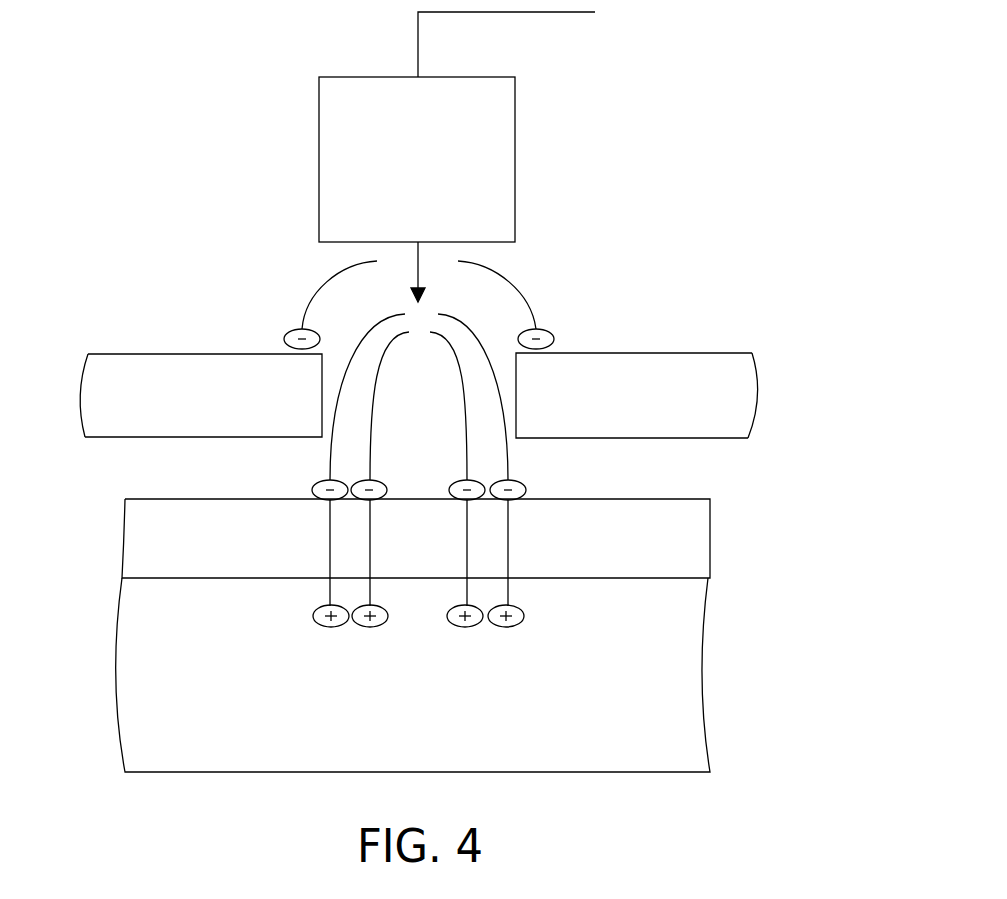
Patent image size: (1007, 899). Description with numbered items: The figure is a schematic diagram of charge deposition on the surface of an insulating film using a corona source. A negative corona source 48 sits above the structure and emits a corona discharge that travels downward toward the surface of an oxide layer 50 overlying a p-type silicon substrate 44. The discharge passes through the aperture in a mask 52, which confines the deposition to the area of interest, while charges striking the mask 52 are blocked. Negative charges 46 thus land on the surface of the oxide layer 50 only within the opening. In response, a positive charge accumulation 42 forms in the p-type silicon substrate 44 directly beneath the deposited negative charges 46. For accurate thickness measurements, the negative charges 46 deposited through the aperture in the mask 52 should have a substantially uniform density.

The negative corona source 48 is at (402, 222).
The mask 52 is at (188, 424).
The negative charges 46 is at (524, 486).
The oxide layer 50 is at (692, 556).
The positive charge accumulation 42 is at (503, 627).
The p-type silicon substrate 44 is at (405, 754).